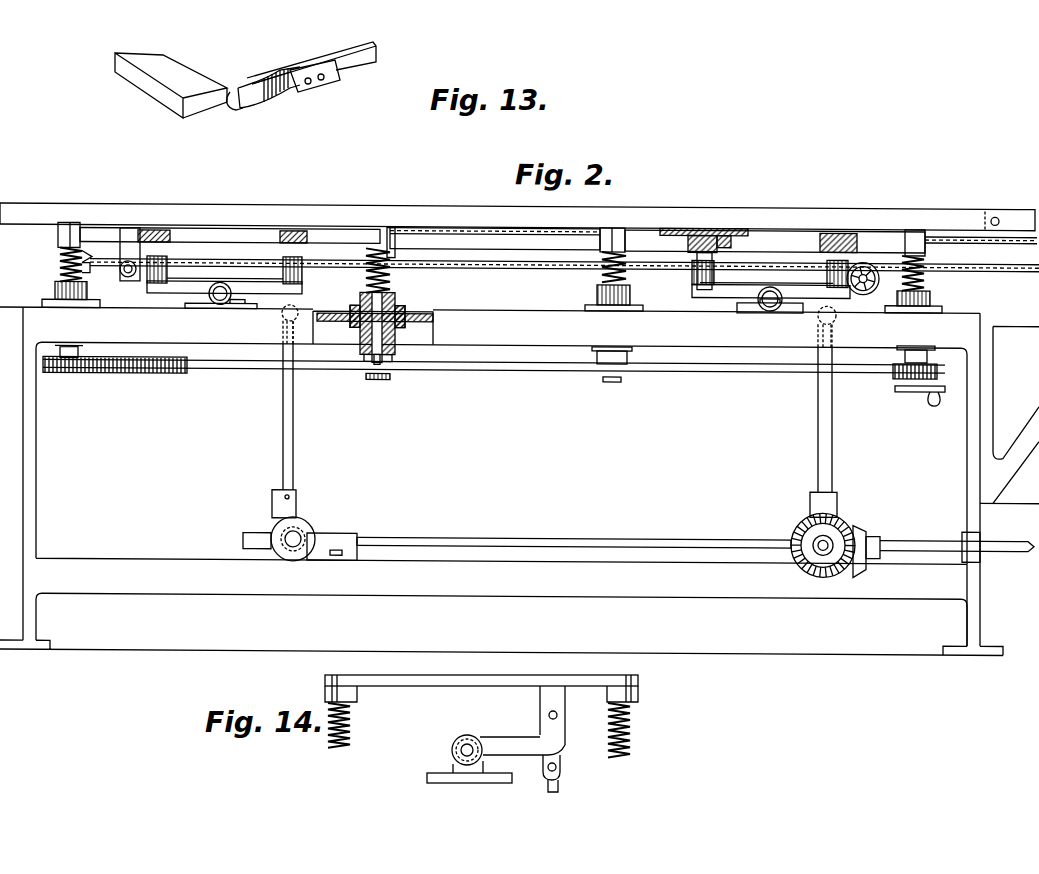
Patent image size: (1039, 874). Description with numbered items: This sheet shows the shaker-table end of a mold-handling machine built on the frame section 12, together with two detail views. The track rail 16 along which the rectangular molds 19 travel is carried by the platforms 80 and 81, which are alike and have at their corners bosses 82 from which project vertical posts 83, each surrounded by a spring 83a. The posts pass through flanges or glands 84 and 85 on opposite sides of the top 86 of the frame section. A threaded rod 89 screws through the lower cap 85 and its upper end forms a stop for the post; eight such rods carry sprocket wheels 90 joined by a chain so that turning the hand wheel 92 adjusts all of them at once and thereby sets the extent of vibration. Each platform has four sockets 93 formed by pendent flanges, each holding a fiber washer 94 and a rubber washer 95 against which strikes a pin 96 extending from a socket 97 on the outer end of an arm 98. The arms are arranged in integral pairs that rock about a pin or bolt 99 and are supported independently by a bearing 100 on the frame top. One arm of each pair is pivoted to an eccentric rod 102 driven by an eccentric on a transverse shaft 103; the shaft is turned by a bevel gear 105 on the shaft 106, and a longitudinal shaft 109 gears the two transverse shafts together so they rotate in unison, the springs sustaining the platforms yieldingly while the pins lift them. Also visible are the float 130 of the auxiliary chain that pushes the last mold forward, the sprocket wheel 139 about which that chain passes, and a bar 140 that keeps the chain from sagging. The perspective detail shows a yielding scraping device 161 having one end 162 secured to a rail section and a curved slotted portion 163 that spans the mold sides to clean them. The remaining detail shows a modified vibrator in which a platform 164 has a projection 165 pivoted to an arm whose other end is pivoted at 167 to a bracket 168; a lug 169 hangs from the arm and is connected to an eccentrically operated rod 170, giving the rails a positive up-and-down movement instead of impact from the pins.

In FIG. 2, the frame section 12 is at (519, 429).
In FIG. 13, the L-shaped rail 16 is at (333, 63).
In FIG. 13, the rectangular mold 19 is at (162, 97).
In FIG. 2, the platform 80 is at (240, 227).
In FIG. 2, the platform 81 is at (782, 228).
In FIG. 2, the boss 82 is at (62, 237).
In FIG. 2, the vertical rod or post 83 is at (382, 300).
In FIG. 2, the spring 83a is at (61, 268).
In FIG. 2, the flange or gland 84 is at (406, 315).
In FIG. 2, the flange or cap 85 is at (396, 352).
In FIG. 2, the top of frame section 86 is at (434, 325).
In FIG. 2, the threaded rod or bolt 89 is at (375, 356).
In FIG. 2, the sprocket wheel 90 is at (377, 378).
In FIG. 2, the hand wheel 92 is at (897, 388).
In FIG. 2, the socket 93 is at (678, 224).
In FIG. 2, the fiber washer 94 is at (703, 231).
In FIG. 2, the rubber washer 95 is at (727, 231).
In FIG. 2, the pin or projection 96 is at (160, 247).
In FIG. 2, the socket 97 is at (705, 290).
In FIG. 2, the arm 98 is at (185, 288).
In FIG. 2, the pin or bolt 99 is at (220, 300).
In FIG. 2, the bearing 100 is at (787, 309).
In FIG. 2, the eccentric rod 102 is at (283, 441).
In FIG. 2, the transverse shaft 103 is at (292, 545).
In FIG. 2, the bevel gear 105 is at (860, 523).
In FIG. 2, the shaft 106 is at (913, 535).
In FIG. 2, the longitudinal shaft 109 is at (433, 535).
In FIG. 2, the float or engaging element 130 is at (87, 270).
In FIG. 2, the sprocket wheel 139 is at (87, 250).
In FIG. 2, the bar 140 is at (580, 233).
In FIG. 13, the yielding scraping device 161 is at (257, 113).
In FIG. 13, the secured end 162 is at (300, 92).
In FIG. 13, the slotted portion 163 is at (233, 110).
In FIG. 14, the platform or frame 164 is at (440, 683).
In FIG. 14, the projection 165 is at (545, 702).
In FIG. 14, the pivot 167 is at (457, 740).
In FIG. 14, the bracket 168 is at (468, 783).
In FIG. 14, the lug 169 is at (561, 760).
In FIG. 14, the operated rod 170 is at (558, 787).